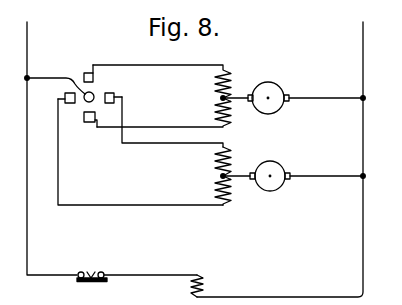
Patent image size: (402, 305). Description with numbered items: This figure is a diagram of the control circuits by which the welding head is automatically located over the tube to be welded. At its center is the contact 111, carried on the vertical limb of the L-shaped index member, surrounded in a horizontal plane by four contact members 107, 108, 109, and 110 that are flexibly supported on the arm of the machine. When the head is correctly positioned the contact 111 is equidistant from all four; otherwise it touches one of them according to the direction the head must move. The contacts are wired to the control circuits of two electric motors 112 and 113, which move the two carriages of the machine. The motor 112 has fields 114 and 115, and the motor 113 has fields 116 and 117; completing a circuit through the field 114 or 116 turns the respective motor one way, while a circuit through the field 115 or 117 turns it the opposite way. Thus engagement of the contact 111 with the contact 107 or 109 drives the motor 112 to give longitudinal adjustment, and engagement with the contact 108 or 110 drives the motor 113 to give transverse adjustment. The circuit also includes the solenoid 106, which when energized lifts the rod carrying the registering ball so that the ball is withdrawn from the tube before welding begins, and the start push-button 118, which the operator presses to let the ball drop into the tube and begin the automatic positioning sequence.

The solenoid 106 is at (205, 291).
The contact member 107 is at (85, 77).
The contact member 108 is at (114, 95).
The contact member 109 is at (85, 116).
The contact member 110 is at (65, 97).
The contact 111 is at (93, 93).
The electric motor 112 is at (277, 105).
The electric motor 113 is at (278, 183).
The field 114 is at (231, 79).
The field 115 is at (232, 107).
The field 116 is at (233, 162).
The field 117 is at (233, 187).
The start push-button 118 is at (92, 274).